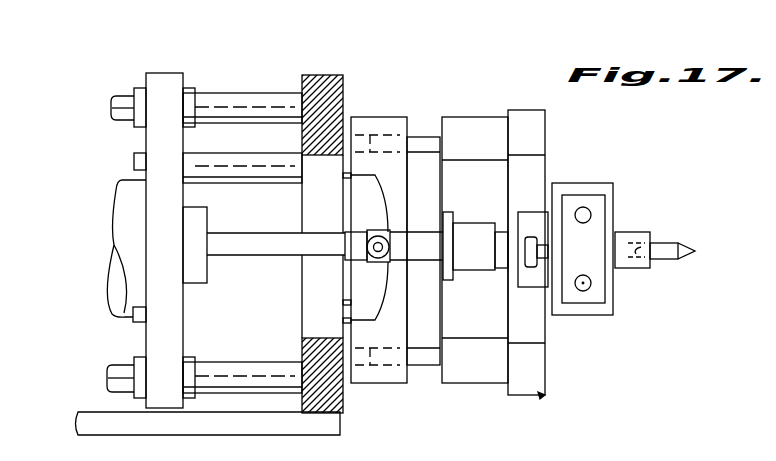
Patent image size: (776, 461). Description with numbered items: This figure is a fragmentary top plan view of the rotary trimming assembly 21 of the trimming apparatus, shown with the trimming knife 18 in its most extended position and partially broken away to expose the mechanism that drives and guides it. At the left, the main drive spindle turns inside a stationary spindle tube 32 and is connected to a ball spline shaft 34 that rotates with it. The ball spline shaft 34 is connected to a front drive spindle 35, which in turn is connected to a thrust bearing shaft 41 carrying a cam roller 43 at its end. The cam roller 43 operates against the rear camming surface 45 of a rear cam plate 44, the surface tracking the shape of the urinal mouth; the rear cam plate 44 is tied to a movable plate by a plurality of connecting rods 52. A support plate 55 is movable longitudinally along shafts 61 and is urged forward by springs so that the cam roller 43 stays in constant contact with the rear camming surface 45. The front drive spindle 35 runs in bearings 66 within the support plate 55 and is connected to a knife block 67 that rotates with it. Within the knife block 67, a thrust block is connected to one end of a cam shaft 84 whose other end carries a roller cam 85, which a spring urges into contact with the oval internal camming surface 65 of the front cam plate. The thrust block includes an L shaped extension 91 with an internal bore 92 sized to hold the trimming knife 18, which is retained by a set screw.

The trimming knife 18 is at (693, 252).
The rotary trimming assembly 21 is at (545, 396).
The spindle tube 32 is at (207, 210).
The ball spline shaft 34 is at (282, 238).
The front drive spindle 35 is at (342, 260).
The thrust bearing shaft 41 is at (378, 230).
The cam roller 43 is at (379, 262).
The rear cam plate 44 is at (375, 117).
The rear camming surface 45 is at (376, 192).
The connecting rods 52 is at (261, 163).
The support plate 55 is at (480, 118).
The shafts 61 is at (428, 135).
The internal camming surface 65 is at (545, 340).
The bearings 66 is at (488, 269).
The knife block 67 is at (605, 185).
The cam shaft 84 is at (550, 242).
The roller cam 85 is at (530, 268).
The L shaped extension 91 is at (628, 262).
The internal bore 92 is at (642, 240).